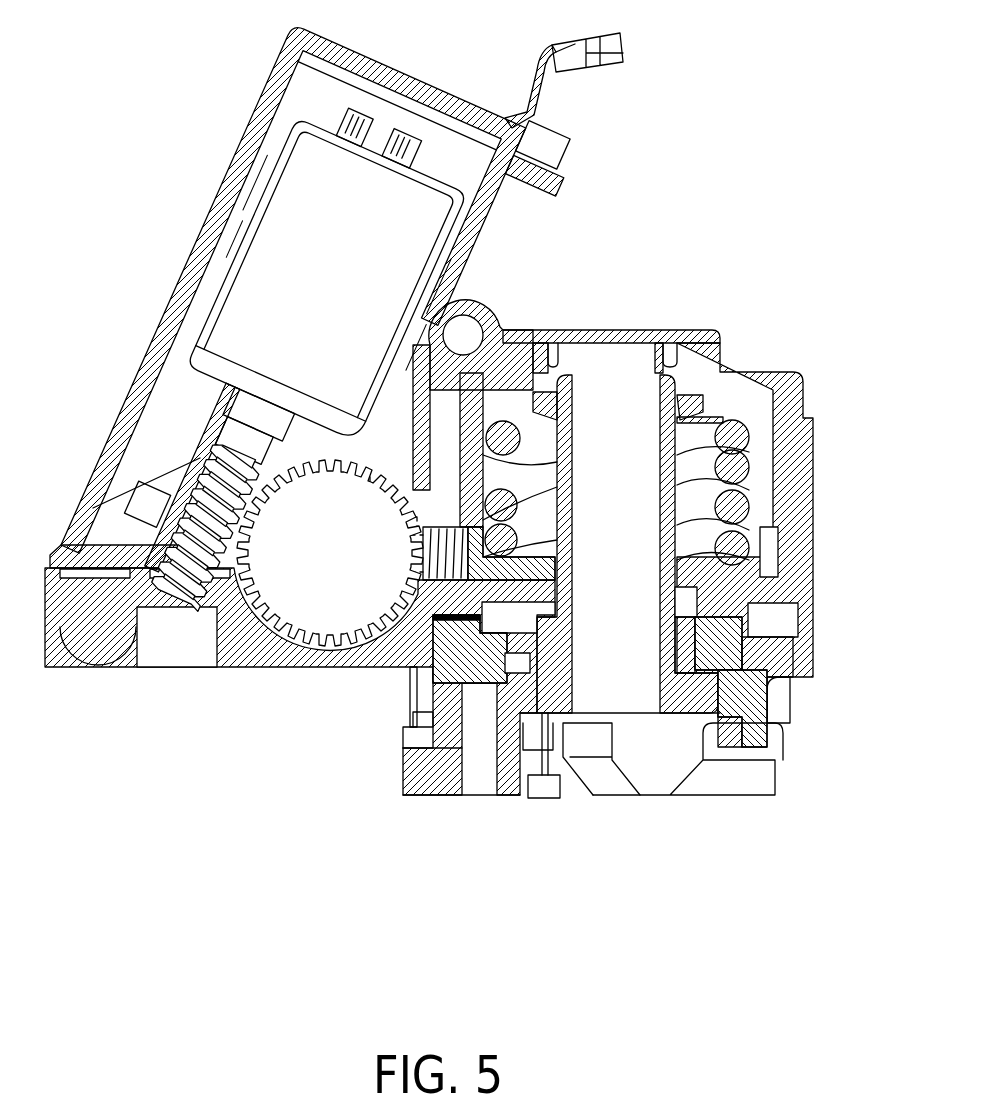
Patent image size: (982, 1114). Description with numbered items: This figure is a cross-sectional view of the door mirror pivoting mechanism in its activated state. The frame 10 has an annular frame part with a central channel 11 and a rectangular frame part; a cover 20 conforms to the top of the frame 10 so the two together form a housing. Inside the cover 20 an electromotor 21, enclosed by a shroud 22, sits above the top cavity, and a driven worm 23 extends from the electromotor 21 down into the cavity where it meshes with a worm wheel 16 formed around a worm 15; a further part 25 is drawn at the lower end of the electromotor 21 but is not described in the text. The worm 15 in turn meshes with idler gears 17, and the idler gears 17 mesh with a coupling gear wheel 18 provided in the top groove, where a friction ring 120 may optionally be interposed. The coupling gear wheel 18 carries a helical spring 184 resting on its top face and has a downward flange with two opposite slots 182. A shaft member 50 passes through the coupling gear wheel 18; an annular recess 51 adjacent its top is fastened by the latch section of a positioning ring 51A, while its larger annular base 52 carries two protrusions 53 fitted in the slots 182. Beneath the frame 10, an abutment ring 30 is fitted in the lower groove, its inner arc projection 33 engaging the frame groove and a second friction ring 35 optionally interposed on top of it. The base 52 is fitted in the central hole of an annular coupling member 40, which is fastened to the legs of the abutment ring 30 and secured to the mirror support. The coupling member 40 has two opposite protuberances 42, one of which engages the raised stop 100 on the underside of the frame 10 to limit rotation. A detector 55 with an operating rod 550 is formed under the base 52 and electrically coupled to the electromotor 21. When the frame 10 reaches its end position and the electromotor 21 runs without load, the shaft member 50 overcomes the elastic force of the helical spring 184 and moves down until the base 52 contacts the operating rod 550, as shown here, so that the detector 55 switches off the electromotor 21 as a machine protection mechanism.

The frame 10 is at (815, 568).
The channel 11 is at (673, 548).
The worm 15 is at (317, 593).
The worm wheel 16 is at (270, 605).
The idler gears 17 is at (357, 670).
The coupling gear wheel 18 is at (775, 545).
The cover 20 is at (495, 300).
The electromotor 21 is at (300, 193).
The shroud 22 is at (188, 262).
The driven worm 23 is at (198, 460).
The bearing bracket 25 is at (317, 433).
The abutment ring 30 is at (800, 665).
The inner arc projection 33 is at (785, 630).
The second friction ring 35 is at (770, 690).
The annular coupling member 40 is at (412, 770).
The protuberances 42 is at (405, 735).
The shaft member 50 is at (580, 398).
The annular recess 51 is at (553, 400).
The positioning ring 51A is at (688, 400).
The annular base 52 is at (685, 710).
The protrusions 53 is at (678, 630).
The detector 55 is at (545, 800).
The raised stop 100 is at (410, 697).
The friction ring 120 is at (790, 610).
The slots 182 is at (675, 600).
The helical spring 184 is at (760, 448).
The operating rod 550 is at (555, 765).